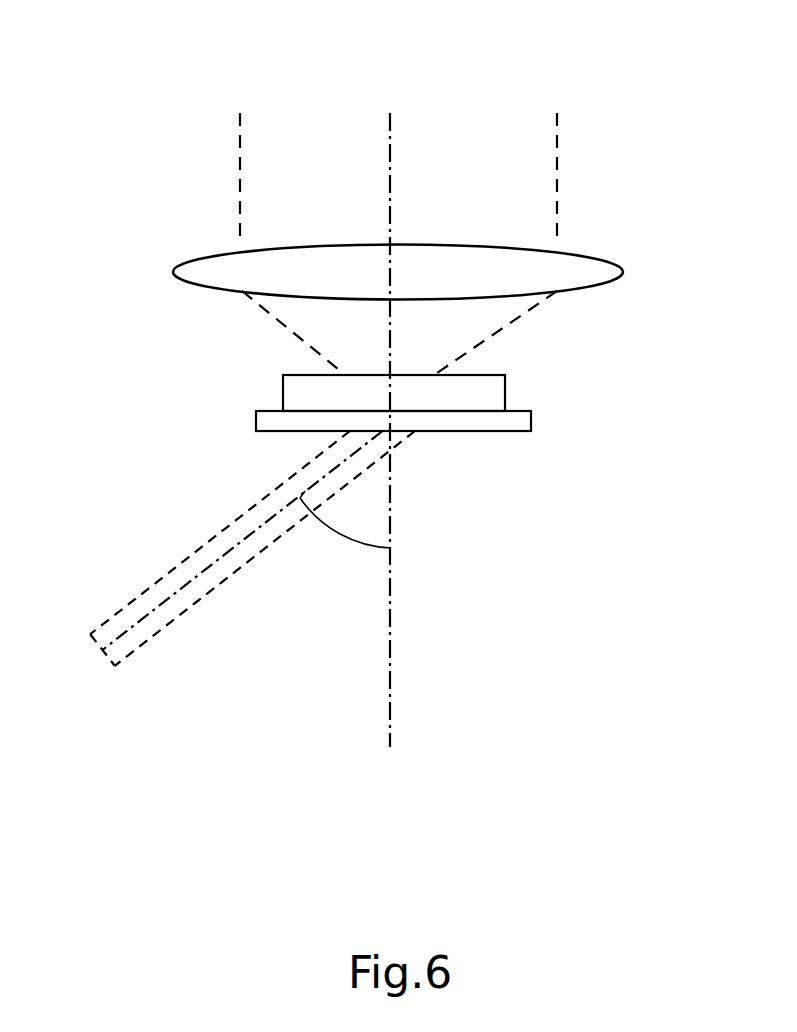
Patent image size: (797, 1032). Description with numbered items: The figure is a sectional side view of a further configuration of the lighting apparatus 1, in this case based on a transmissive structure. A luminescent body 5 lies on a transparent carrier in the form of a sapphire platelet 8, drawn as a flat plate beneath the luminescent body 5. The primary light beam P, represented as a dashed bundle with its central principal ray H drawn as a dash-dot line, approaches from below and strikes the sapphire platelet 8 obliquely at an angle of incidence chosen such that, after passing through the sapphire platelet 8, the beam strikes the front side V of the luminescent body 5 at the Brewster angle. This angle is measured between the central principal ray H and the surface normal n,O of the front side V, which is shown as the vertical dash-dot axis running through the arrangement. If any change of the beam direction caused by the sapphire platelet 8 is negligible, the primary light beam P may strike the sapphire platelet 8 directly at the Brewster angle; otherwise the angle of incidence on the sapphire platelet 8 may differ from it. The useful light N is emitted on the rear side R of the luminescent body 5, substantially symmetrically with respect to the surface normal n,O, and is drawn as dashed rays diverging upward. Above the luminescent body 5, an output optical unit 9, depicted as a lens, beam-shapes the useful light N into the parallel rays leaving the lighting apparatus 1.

The lighting apparatus 1 is at (106, 117).
The luminescent body 5 is at (507, 395).
The sapphire platelet 8 is at (533, 423).
The output optical unit 9 is at (625, 273).
The useful light N is at (558, 198).
The rear side R is at (293, 374).
The front side V is at (293, 409).
The central principal ray H is at (88, 667).
The primary light beam p is at (148, 642).
The surface normal n,O is at (395, 628).